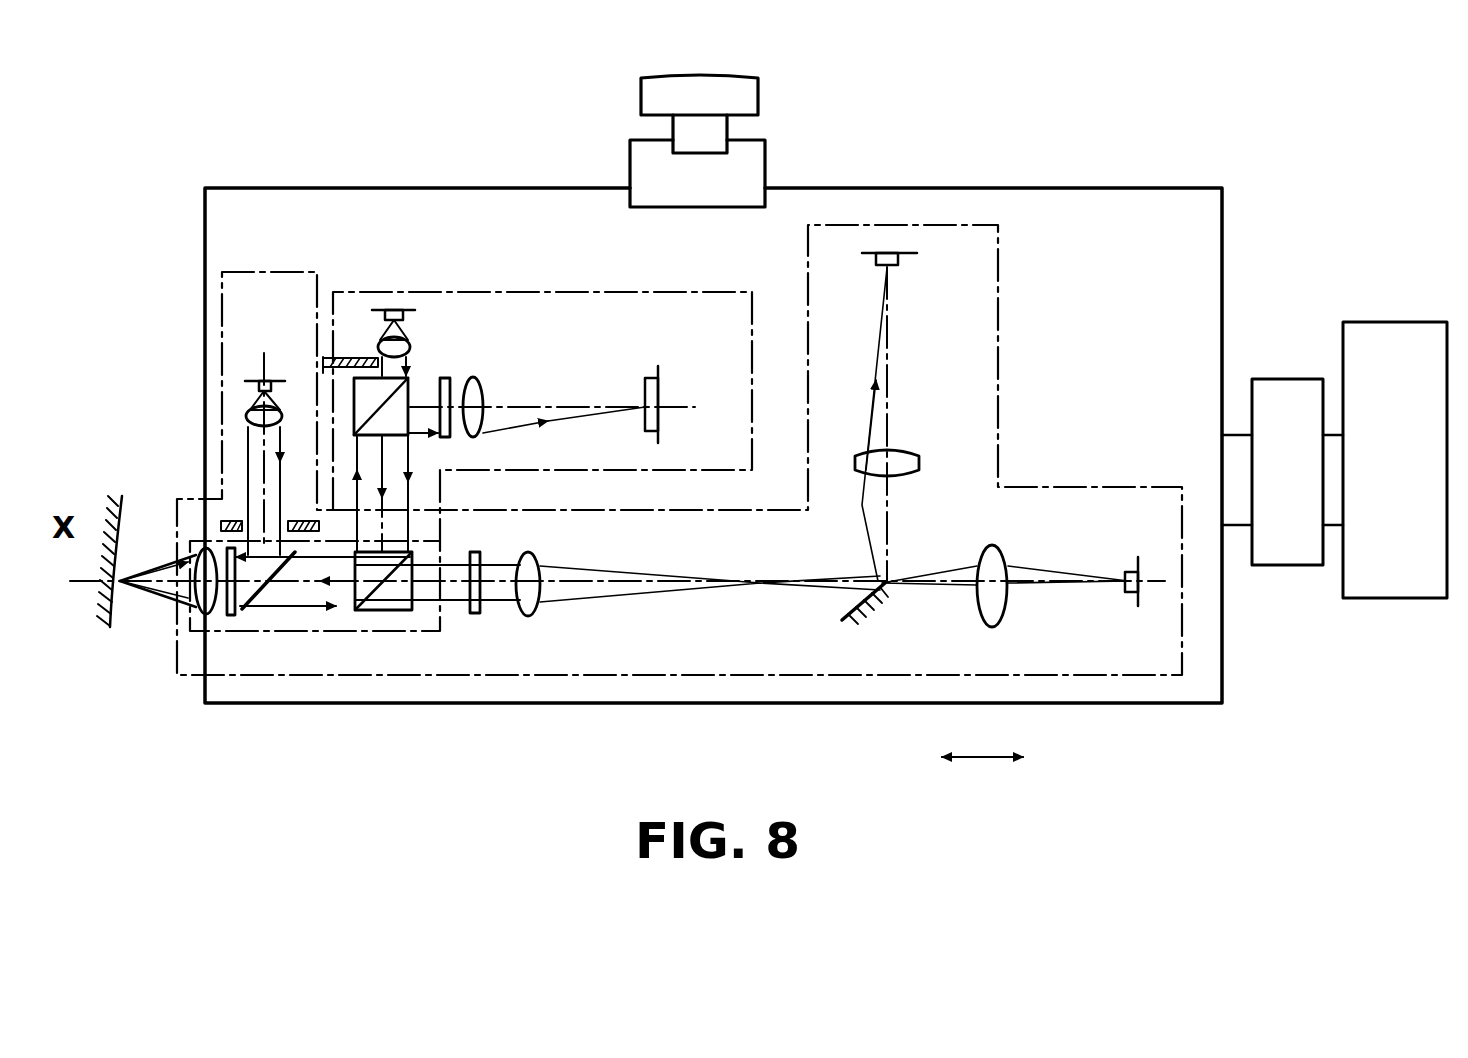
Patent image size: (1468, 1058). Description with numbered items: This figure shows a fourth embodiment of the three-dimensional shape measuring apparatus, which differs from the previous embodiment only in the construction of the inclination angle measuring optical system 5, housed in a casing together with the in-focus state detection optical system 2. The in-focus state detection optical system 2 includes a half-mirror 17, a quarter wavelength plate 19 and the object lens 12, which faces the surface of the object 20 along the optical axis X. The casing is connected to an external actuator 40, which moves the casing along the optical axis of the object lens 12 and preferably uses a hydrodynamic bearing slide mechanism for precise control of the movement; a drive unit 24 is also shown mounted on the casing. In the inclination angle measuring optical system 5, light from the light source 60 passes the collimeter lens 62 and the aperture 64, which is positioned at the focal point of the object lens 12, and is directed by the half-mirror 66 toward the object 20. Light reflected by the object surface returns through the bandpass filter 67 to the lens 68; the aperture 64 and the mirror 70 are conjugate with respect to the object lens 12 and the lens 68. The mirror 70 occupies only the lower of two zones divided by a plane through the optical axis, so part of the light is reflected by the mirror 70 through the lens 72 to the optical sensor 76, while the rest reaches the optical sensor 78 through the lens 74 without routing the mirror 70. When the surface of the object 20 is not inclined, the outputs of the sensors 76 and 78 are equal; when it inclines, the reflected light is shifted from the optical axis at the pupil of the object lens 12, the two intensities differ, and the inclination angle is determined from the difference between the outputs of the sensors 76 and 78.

The in-focus state detection optical system 2 is at (503, 288).
The inclination angle measuring optical system 5 is at (730, 677).
The object lens 12 is at (198, 606).
The half-mirror 17 is at (391, 616).
The quarter wavelength plate 19 is at (237, 632).
The object 20 is at (112, 628).
The drive motor 24 is at (788, 127).
The external actuator 40 is at (1308, 302).
The light source 60 is at (259, 390).
The collimeter lens 62 is at (246, 416).
The aperture 64 is at (222, 522).
The half-mirror 66 is at (256, 614).
The bandpass filter 67 is at (478, 614).
The lens 68 is at (540, 612).
The mirror 70 is at (868, 612).
The lens 72 is at (918, 456).
The lens 74 is at (1008, 606).
The optical sensor 76 is at (898, 266).
The optical sensor 78 is at (1125, 572).